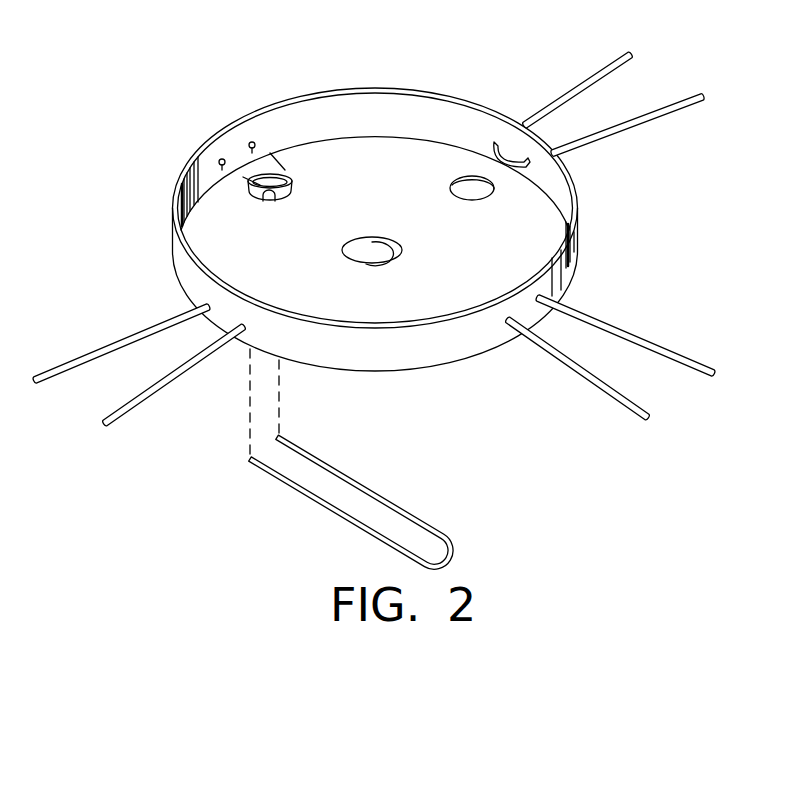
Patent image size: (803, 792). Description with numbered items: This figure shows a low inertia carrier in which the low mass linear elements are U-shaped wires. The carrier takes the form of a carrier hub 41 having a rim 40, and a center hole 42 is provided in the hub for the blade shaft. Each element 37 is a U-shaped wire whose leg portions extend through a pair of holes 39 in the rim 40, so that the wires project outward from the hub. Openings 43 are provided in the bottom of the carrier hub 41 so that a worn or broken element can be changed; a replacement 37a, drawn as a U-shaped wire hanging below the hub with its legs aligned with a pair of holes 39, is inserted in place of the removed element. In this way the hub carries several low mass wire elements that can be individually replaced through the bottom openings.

The element 37 is at (563, 98).
The replacement element 37a is at (327, 511).
The holes 39 is at (252, 142).
The rim 40 is at (340, 113).
The carrier hub 41 is at (384, 372).
The center hole 42 is at (404, 244).
The openings 43 is at (275, 200).